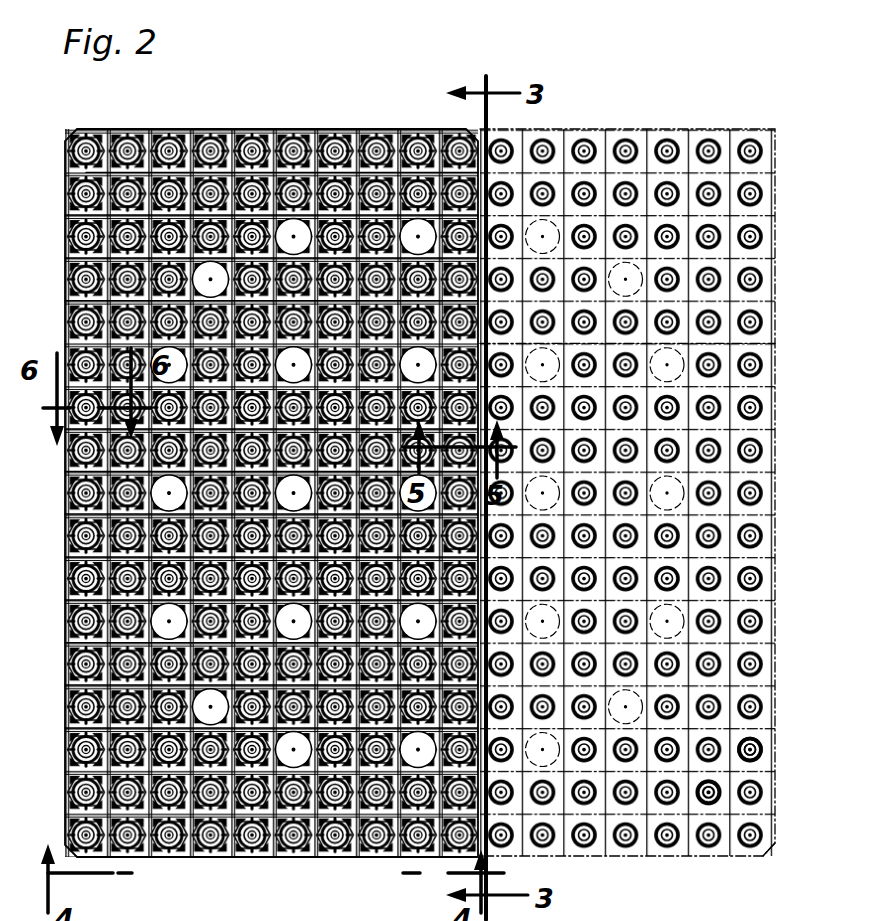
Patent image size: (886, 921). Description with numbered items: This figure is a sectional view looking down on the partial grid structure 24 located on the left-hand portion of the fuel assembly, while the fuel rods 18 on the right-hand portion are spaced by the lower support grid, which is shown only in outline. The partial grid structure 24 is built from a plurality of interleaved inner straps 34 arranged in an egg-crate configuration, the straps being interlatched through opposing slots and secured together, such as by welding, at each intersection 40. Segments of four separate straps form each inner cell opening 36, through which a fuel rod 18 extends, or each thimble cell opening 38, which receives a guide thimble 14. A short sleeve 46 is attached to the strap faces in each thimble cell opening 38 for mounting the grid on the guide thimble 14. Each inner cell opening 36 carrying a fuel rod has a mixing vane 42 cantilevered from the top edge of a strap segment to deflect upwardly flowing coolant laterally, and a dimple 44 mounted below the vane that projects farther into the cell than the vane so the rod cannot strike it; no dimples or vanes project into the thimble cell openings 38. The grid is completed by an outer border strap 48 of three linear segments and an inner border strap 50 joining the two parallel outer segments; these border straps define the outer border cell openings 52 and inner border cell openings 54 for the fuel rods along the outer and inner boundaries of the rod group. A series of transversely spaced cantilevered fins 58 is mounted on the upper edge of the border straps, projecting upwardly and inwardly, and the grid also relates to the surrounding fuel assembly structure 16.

The guide thimble 14 is at (705, 626).
The board edge 16 is at (767, 660).
The fuel rod 18 is at (710, 782).
The partial grid structure 24 is at (253, 72).
The inner strap 34 is at (378, 121).
The inner cell opening 36 is at (330, 121).
The thimble cell opening 38 is at (403, 121).
The intersection 40 is at (313, 121).
The mixing vane 42 is at (120, 121).
The dimple 44 is at (202, 121).
The sleeve 46 is at (473, 157).
The outer border strap 48 is at (172, 121).
The inner border strap 50 is at (476, 235).
The outer border cell opening 52 is at (163, 121).
The inner border cell opening 54 is at (473, 190).
The fin 58 is at (305, 121).